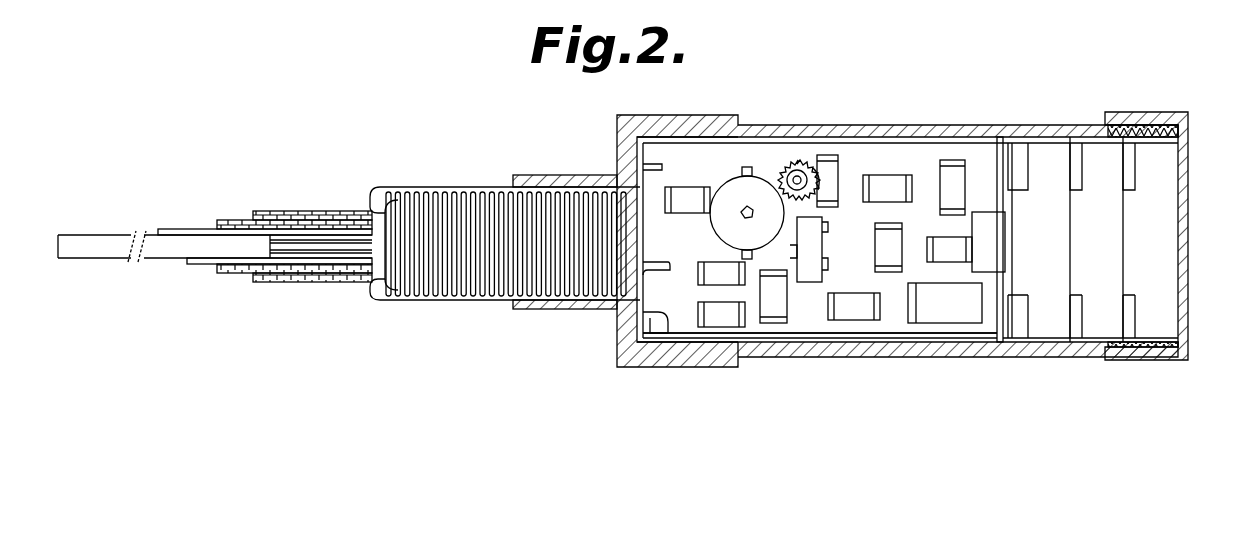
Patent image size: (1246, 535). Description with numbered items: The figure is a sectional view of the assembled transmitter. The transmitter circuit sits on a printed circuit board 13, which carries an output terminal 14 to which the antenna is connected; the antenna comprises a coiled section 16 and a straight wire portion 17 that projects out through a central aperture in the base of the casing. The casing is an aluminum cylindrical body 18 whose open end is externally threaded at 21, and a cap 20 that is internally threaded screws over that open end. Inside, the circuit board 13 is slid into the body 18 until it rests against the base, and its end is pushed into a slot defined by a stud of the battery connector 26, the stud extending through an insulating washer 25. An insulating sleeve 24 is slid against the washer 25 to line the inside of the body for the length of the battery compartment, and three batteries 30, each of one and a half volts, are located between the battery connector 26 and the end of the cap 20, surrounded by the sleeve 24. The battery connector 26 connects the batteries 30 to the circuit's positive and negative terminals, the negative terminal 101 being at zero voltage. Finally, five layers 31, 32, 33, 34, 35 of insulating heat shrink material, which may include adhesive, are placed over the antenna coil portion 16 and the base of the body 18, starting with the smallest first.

The printed circuit board 13 is at (812, 322).
The output terminal 14 is at (666, 263).
The coiled section 16 is at (467, 257).
The straight wire portion 17 is at (172, 248).
The cylindrical body 18 is at (882, 128).
The cap 20 is at (1162, 118).
The threaded exterior surface 21 is at (1137, 357).
The insulating sleeve 24 is at (1047, 130).
The insulating washer 25 is at (997, 318).
The battery connector 26 is at (990, 240).
The batteries 30 is at (1103, 313).
The first layer of insulating heat shrink material 31 is at (283, 250).
The second layer of insulating heat shrink material 32 is at (166, 232).
The third layer of insulating heat shrink material 33 is at (203, 267).
The fourth layer of insulating heat shrink material 34 is at (347, 272).
The fifth layer of insulating heat shrink material 35 is at (562, 300).
The negative terminal 101 is at (662, 345).